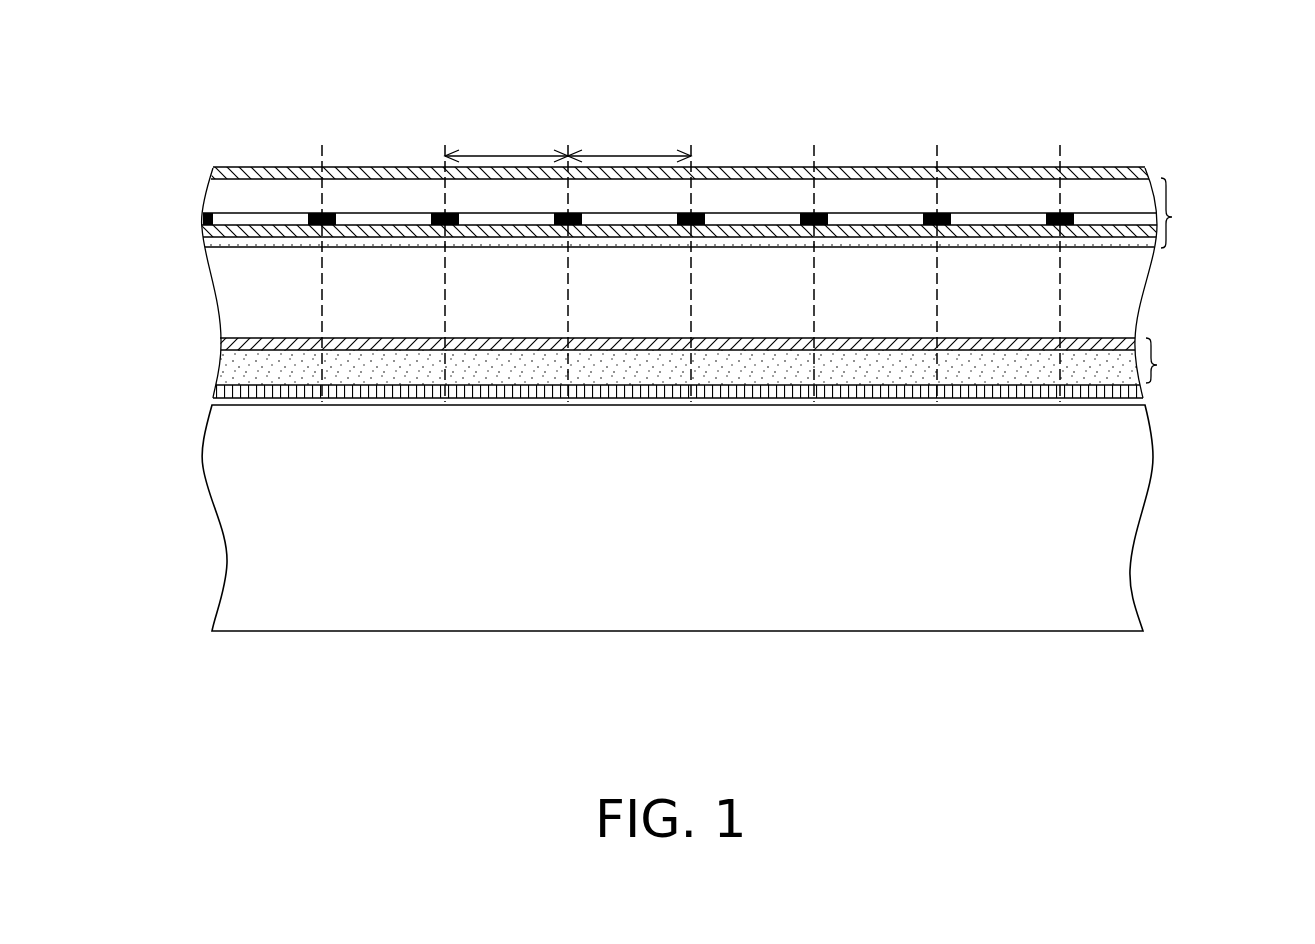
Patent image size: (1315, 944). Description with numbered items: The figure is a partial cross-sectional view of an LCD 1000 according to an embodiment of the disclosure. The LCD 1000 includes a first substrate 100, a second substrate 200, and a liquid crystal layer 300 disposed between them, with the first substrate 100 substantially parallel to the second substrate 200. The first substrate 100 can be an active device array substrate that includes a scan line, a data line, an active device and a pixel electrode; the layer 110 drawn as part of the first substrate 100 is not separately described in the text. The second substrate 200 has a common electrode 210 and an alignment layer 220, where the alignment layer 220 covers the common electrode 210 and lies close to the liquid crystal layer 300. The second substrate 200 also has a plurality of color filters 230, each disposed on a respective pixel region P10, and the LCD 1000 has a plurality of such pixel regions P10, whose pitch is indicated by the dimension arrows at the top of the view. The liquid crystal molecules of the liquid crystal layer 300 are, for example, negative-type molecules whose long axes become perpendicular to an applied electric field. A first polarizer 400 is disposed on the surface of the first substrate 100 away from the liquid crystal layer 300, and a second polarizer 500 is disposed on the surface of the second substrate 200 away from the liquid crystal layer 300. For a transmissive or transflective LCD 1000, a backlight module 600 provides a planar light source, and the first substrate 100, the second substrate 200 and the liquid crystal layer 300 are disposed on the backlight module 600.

The LCD 1000 is at (1200, 757).
The first substrate 100 is at (1159, 365).
The first layer of first substrate 110 is at (220, 348).
The second substrate 200 is at (1174, 217).
The common electrode 210 is at (212, 232).
The alignment layer 220 is at (204, 242).
The color filters 230 is at (260, 217).
The liquid crystal layer 300 is at (1136, 277).
The first polarizer 400 is at (1144, 397).
The second polarizer 500 is at (1146, 172).
The backlight module 600 is at (1125, 530).
The pixel regions P10 is at (502, 154).